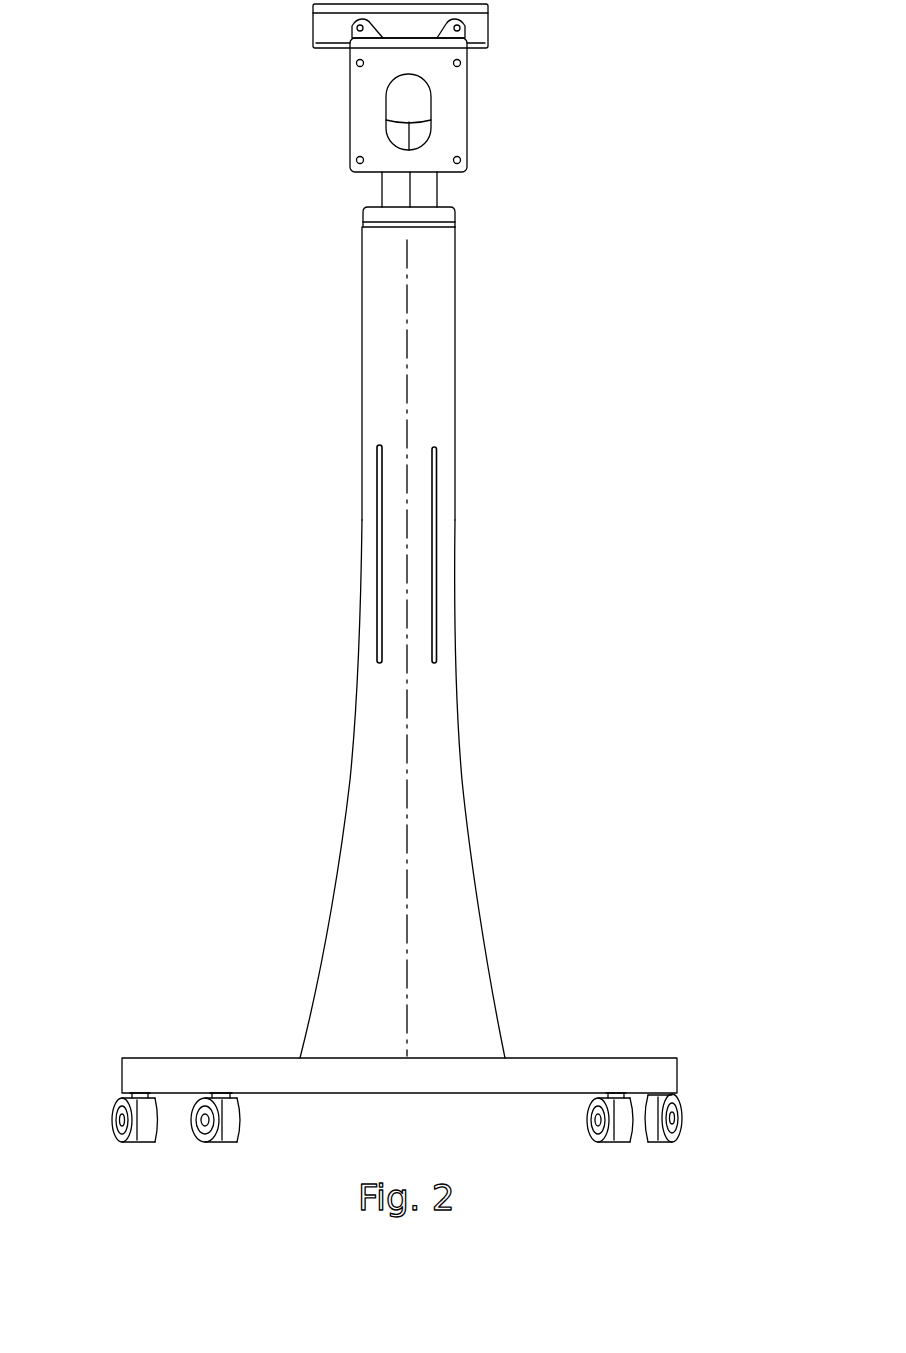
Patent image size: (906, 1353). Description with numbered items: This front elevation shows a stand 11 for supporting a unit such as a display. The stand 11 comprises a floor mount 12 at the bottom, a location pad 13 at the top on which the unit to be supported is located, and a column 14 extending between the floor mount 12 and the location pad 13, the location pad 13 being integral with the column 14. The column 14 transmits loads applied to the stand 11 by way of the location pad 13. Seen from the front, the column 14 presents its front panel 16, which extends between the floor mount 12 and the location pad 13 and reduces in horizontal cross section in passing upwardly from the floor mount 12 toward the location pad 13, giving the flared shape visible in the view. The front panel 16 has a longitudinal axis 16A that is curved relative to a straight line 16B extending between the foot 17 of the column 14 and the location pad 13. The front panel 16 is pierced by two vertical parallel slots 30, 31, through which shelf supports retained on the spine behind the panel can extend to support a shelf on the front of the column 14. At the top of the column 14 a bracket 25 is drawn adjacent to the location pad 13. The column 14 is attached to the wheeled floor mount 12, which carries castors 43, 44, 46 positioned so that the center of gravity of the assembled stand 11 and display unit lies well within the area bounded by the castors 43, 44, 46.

The stand 11 is at (404, 578).
The floor mount 12 is at (275, 1068).
The location pad 13 is at (370, 105).
The column 14 is at (455, 253).
The front panel 16 is at (457, 741).
The longitudinal axis 16A is at (408, 440).
The straight line 16B is at (408, 505).
The foot 17 is at (410, 1050).
The mounting bracket 25 is at (480, 35).
The slot 30 is at (435, 572).
The slot 31 is at (377, 535).
The castor 43 is at (112, 1120).
The castor 44 is at (680, 1113).
The castor 46 is at (232, 1115).